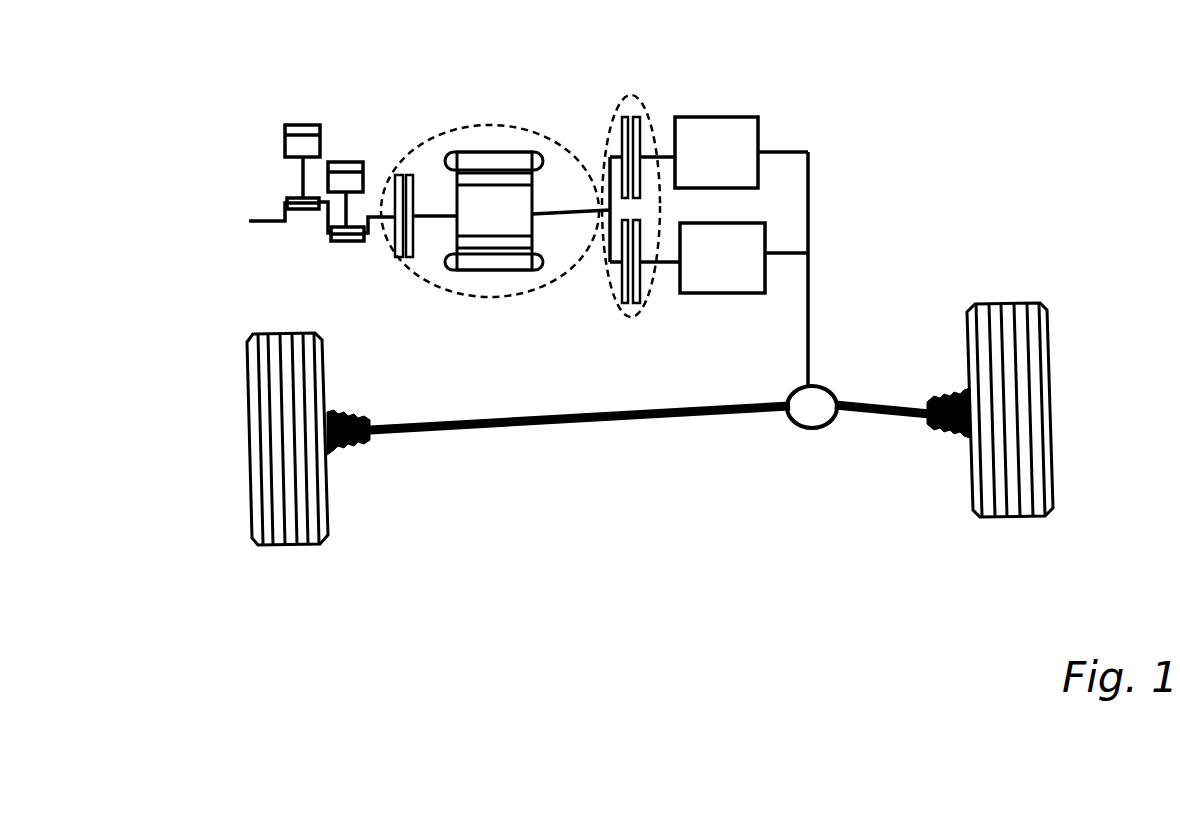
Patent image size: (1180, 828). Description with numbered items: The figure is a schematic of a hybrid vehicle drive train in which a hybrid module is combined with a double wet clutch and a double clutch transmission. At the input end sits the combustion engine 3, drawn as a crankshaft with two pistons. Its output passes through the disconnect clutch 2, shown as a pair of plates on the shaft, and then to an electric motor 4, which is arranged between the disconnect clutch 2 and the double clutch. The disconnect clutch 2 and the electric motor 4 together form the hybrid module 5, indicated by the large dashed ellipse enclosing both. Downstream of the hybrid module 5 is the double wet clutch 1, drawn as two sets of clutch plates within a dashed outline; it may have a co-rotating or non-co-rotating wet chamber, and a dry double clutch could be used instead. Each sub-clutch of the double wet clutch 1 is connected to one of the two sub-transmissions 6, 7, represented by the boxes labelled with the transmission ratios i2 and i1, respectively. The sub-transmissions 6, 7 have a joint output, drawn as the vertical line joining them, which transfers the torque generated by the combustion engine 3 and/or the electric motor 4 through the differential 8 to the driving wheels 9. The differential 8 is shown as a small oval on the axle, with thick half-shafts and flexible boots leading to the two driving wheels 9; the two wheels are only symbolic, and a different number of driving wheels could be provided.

The double wet clutch 1 is at (625, 98).
The disconnect clutch 2 is at (405, 177).
The combustion engine 3 is at (255, 185).
The electric motor 4 is at (493, 157).
The hybrid module 5 is at (487, 295).
The sub-transmission 6 is at (747, 116).
The sub-transmission 7 is at (723, 295).
The differential 8 is at (832, 383).
The driving wheels 9 is at (260, 358).